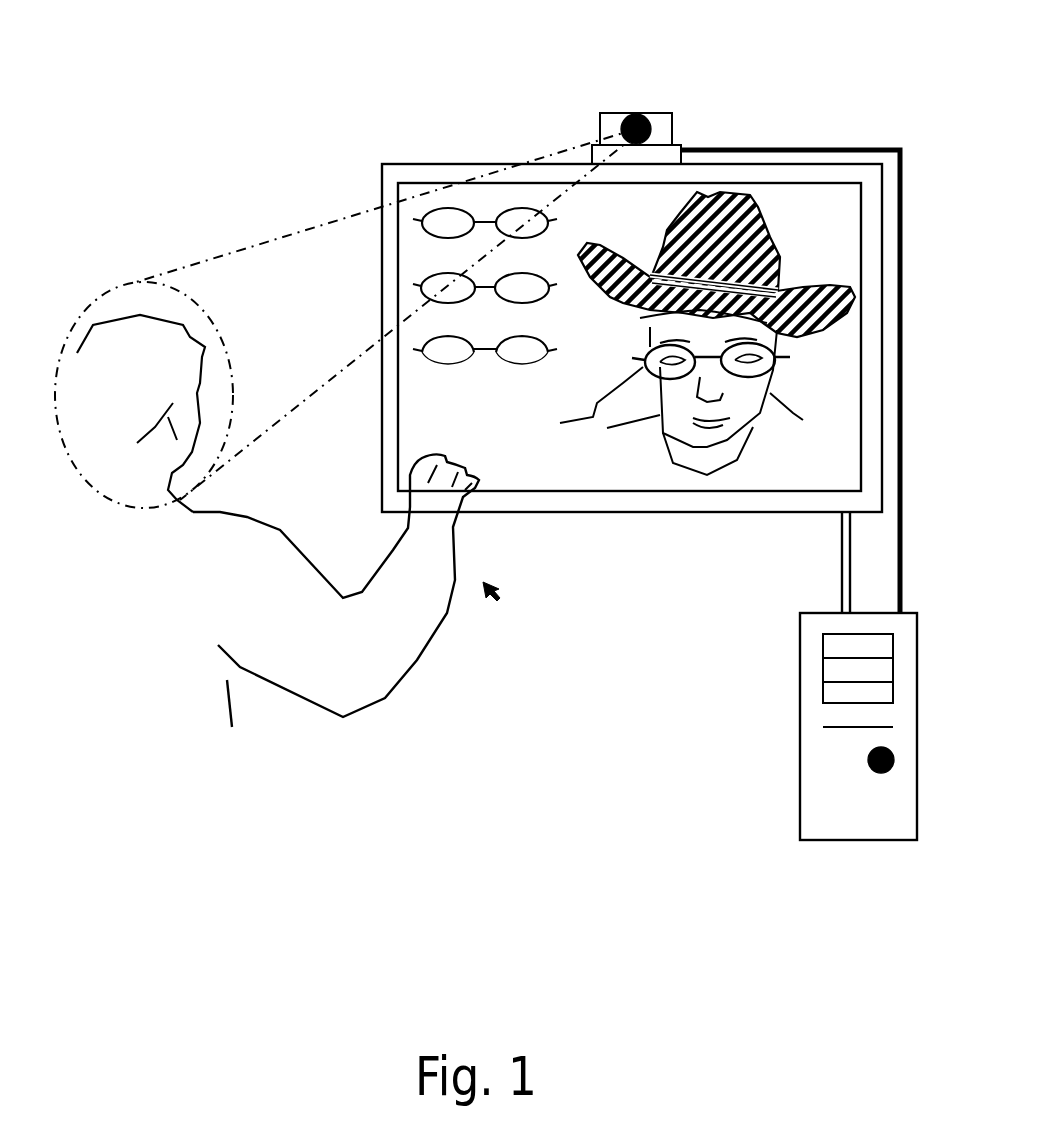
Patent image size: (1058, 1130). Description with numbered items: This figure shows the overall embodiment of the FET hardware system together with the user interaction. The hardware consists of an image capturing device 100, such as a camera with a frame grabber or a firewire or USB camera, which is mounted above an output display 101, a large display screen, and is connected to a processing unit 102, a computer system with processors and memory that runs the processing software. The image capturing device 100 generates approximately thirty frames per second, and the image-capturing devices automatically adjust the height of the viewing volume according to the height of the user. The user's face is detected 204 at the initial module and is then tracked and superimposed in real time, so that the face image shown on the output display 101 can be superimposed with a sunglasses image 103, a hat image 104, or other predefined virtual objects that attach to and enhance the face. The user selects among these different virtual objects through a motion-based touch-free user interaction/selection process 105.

The image capturing device 100 is at (663, 113).
The output display 101 is at (397, 172).
The processing unit 102 is at (800, 825).
The sunglasses image 103 is at (637, 370).
The hat image 104 is at (807, 285).
The motion-based touch-free user interaction/selection process 105 is at (498, 600).
The user's face detected 204 is at (120, 285).